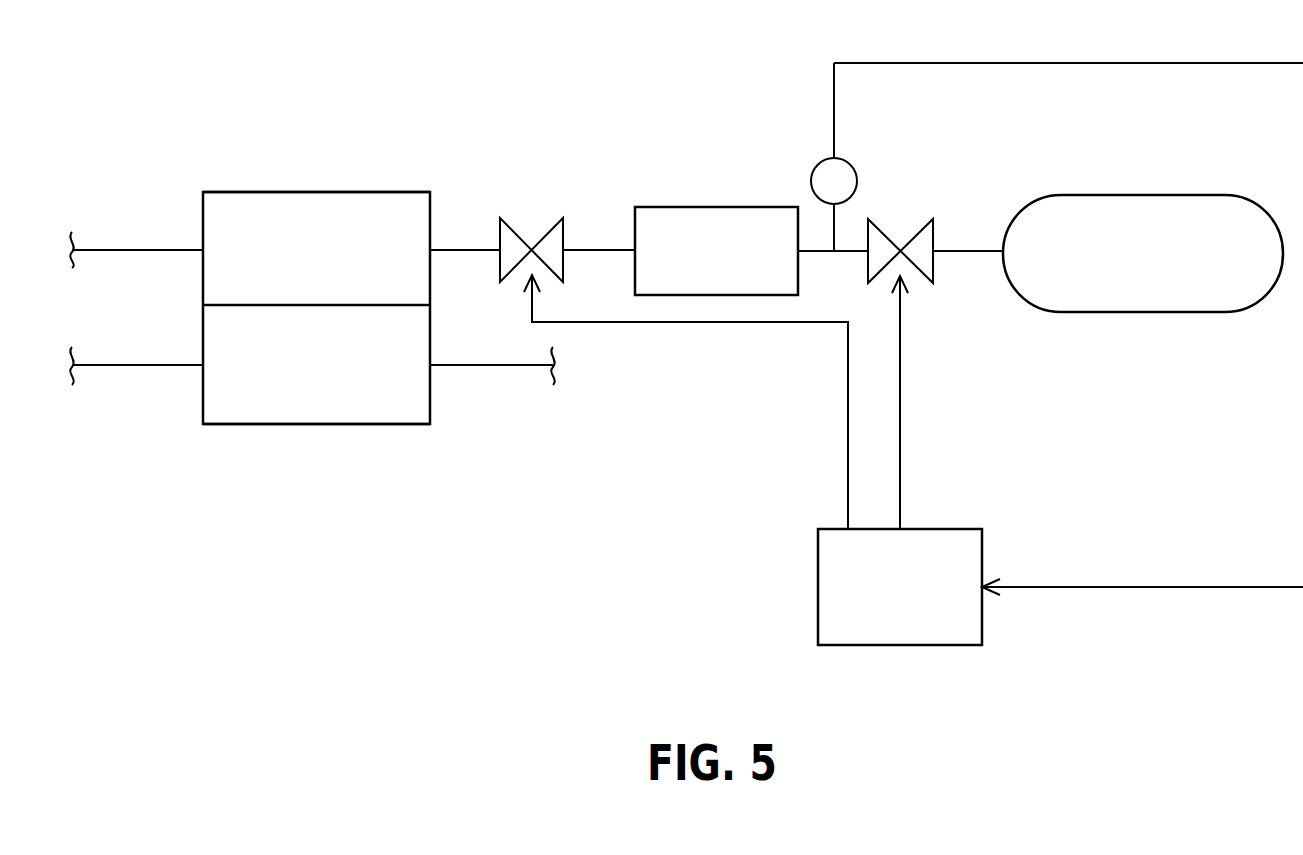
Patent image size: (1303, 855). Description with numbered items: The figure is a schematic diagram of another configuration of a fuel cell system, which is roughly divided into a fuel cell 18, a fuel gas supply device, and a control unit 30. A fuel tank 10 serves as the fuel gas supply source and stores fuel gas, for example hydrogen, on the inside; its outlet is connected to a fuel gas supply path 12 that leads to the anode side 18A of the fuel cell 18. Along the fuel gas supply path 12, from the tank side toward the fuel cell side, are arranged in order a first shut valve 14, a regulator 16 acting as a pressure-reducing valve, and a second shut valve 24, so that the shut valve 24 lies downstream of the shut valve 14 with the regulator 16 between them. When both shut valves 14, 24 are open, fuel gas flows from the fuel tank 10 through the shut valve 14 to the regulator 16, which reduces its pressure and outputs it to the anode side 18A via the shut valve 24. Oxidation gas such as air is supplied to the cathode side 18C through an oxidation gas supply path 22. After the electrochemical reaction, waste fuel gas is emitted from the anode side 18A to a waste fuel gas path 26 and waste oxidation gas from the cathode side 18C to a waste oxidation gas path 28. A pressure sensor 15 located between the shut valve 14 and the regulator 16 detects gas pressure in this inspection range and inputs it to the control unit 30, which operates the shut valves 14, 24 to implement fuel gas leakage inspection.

The fuel tank 10 is at (1160, 195).
The fuel gas supply path 12 is at (602, 250).
The shut valve 14 is at (918, 231).
The pressure sensor 15 is at (818, 166).
The regulator 16 is at (748, 207).
The fuel cell 18 is at (365, 192).
The anode side 18A is at (272, 222).
The cathode side 18C is at (306, 400).
The oxidation gas supply path 22 is at (499, 367).
The shut valve 24 is at (550, 232).
The waste fuel gas path 26 is at (124, 250).
The waste oxidation gas path 28 is at (121, 366).
The control unit 30 is at (920, 645).